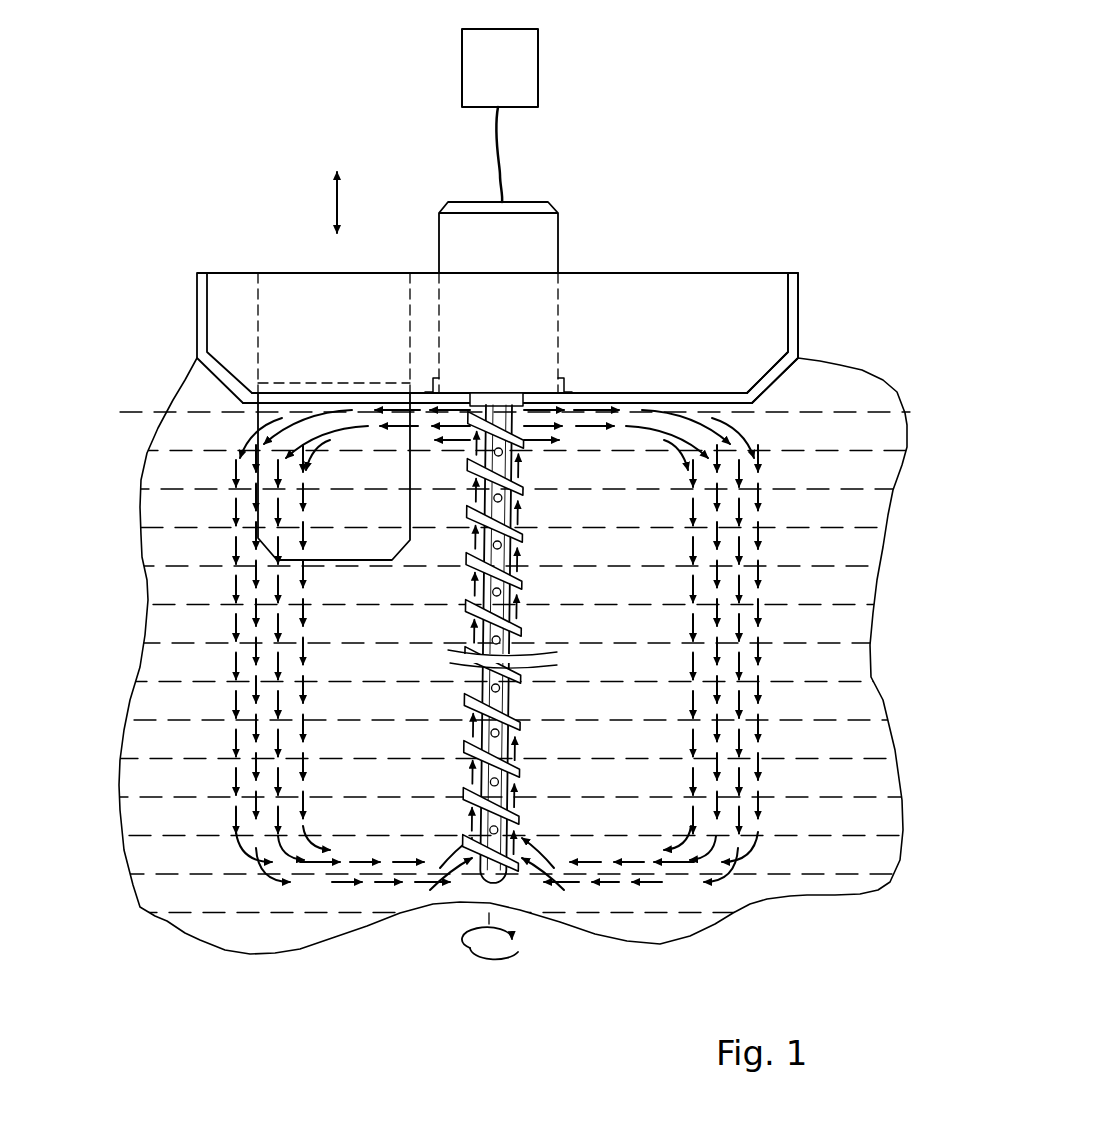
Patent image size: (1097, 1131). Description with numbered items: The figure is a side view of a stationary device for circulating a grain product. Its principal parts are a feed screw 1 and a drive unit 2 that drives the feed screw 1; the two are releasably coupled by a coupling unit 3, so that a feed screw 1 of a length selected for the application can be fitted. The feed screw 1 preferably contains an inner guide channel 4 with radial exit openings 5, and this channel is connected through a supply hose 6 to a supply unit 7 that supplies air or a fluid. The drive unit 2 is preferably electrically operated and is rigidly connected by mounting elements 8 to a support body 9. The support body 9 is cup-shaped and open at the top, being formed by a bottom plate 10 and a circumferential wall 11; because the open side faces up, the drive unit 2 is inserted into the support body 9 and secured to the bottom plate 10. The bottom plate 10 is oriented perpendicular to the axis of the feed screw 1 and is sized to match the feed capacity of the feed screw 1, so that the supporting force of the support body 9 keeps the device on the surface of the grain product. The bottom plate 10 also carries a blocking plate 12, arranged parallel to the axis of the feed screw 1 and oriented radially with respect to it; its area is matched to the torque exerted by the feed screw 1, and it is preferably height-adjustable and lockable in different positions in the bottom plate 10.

The feed screw 1 is at (451, 694).
The drive unit 2 is at (535, 238).
The coupling unit 3 is at (502, 408).
The inner guide channel 4 is at (473, 760).
The radial exit openings 5 is at (490, 833).
The supply hose 6 is at (497, 153).
The supply unit 7 is at (515, 62).
The mounting elements 8 is at (567, 388).
The support body 9 is at (718, 337).
The bottom plate 10 is at (712, 398).
The circumferential wall 11 is at (792, 320).
The blocking plate 12 is at (353, 509).